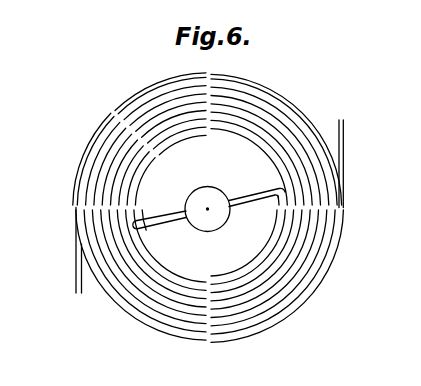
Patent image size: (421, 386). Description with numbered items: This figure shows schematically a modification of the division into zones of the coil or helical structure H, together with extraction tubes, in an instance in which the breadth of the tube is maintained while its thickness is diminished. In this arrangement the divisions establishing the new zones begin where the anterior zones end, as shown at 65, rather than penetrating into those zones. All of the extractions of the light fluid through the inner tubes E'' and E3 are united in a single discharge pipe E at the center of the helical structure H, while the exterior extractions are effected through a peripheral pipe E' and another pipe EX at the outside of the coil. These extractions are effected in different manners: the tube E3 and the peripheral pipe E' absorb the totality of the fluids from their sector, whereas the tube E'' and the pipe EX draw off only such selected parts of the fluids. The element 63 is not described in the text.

The outer turn of coil 63 is at (209, 70).
The helical structure H is at (292, 93).
The peripheral pipe E' is at (357, 164).
The zone division 65 is at (76, 207).
The extraction pipe EX is at (79, 278).
The discharge pipe E is at (207, 191).
The extraction tube E'' is at (159, 205).
The extraction tube E3 is at (249, 205).